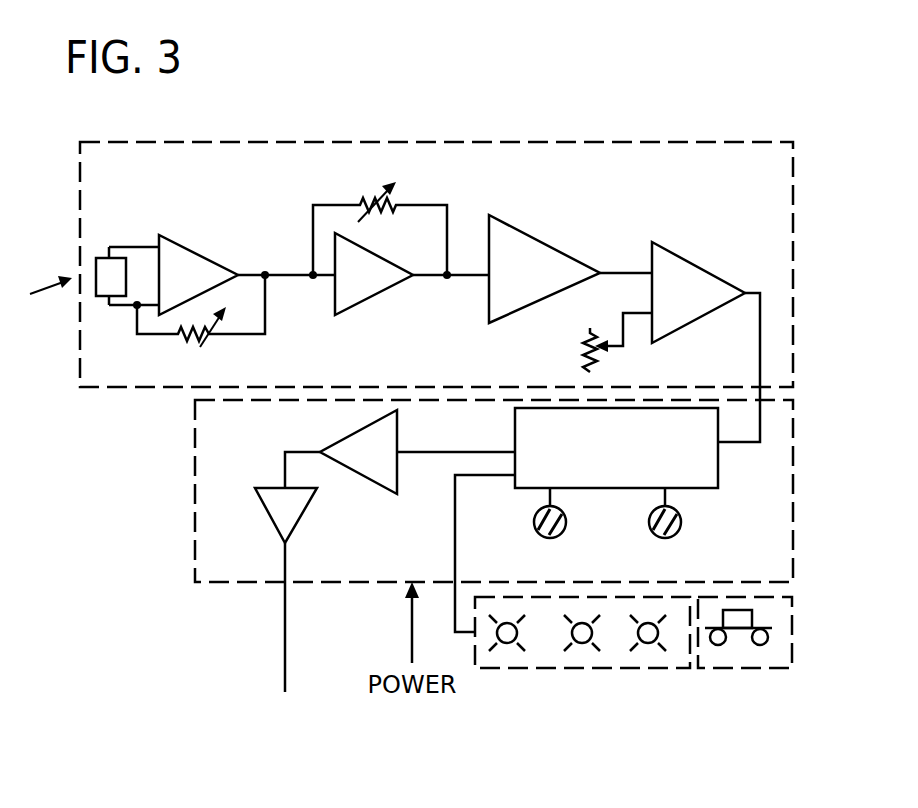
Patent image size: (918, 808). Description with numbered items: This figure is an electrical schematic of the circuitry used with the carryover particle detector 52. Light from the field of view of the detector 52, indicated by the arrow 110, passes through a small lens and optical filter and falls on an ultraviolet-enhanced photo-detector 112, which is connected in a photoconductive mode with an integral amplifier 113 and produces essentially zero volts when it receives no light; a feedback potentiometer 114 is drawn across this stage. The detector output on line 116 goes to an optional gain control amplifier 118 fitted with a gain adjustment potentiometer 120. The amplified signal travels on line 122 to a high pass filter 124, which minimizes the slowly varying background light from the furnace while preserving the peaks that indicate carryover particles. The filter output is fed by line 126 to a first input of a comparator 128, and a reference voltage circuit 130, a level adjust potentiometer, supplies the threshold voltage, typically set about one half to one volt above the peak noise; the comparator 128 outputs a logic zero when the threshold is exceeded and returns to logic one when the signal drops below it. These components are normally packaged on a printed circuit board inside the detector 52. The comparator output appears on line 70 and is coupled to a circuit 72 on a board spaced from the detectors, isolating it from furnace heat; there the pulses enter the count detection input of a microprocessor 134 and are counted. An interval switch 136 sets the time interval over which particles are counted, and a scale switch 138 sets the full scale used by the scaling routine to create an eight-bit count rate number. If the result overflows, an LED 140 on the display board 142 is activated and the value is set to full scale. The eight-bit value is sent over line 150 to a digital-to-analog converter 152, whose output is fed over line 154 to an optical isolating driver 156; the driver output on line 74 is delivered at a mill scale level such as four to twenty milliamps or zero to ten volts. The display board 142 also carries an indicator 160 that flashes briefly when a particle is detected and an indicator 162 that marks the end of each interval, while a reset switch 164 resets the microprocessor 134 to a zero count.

The detector 52 is at (86, 404).
The line 70 is at (762, 392).
The circuit 72 is at (195, 517).
The line 74 is at (285, 620).
The arrow 110 is at (52, 284).
The photo-detector 112 is at (97, 287).
The integral amplifier 113 is at (197, 250).
The gain adjusting potentiometer 114 is at (210, 338).
The line 116 is at (283, 268).
The gain control amplifier 118 is at (375, 290).
The gain adjustment potentiometer 120 is at (372, 198).
The line 122 is at (467, 277).
The high pass filter 124 is at (555, 245).
The line 126 is at (615, 268).
The comparator 128 is at (703, 267).
The reference voltage circuit 130 is at (597, 360).
The microprocessor 134 is at (703, 487).
The interval switch 136 is at (682, 520).
The scale switch 138 is at (567, 518).
The LED 140 is at (510, 645).
The display board 142 is at (605, 668).
The line 150 is at (417, 453).
The digital-to-analog converter 152 is at (370, 480).
The line 154 is at (285, 470).
The driver 156 is at (300, 522).
The indicator 160 is at (585, 645).
The indicator 162 is at (650, 645).
The reset switch 164 is at (743, 645).